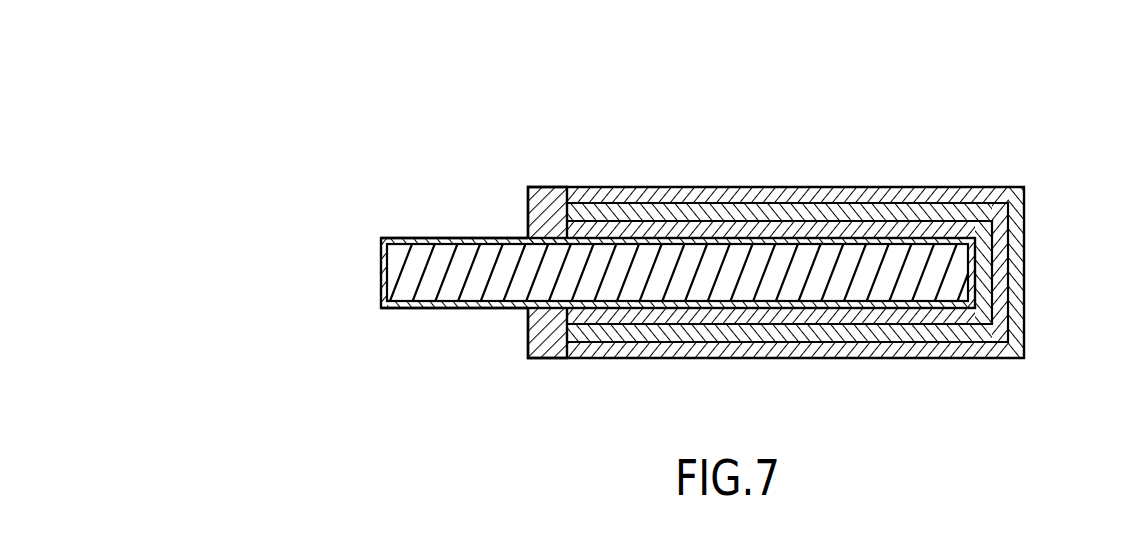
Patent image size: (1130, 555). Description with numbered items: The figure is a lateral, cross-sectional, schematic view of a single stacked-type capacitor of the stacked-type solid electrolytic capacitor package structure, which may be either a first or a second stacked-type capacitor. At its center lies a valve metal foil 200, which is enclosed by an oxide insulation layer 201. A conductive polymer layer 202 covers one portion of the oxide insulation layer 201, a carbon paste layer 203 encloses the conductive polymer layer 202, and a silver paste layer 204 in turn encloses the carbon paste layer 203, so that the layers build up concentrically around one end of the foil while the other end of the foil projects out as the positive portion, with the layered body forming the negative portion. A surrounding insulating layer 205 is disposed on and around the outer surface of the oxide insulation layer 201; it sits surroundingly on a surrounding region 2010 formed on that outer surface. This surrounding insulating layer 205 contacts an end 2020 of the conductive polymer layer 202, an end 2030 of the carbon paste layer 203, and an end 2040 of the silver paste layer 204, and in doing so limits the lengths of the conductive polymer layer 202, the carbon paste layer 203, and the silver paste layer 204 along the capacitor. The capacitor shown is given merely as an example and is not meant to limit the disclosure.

The valve metal foil 200 is at (910, 290).
The oxide insulation layer 201 is at (972, 297).
The conductive polymer layer 202 is at (981, 252).
The carbon paste layer 203 is at (995, 212).
The silver paste layer 204 is at (957, 192).
The surrounding insulating layer 205 is at (555, 340).
The surrounding region 2010 is at (552, 316).
The end of the conductive polymer layer 2020 is at (555, 236).
The end of the carbon paste layer 2030 is at (541, 216).
The end of the silver paste layer 2040 is at (556, 200).